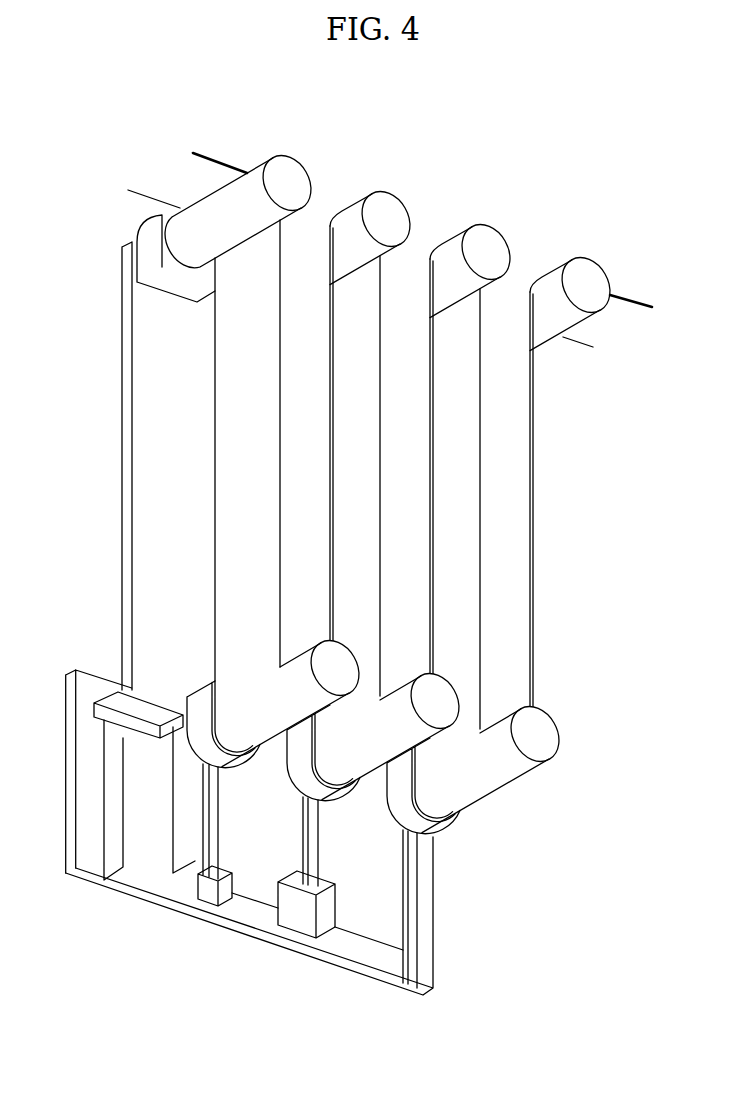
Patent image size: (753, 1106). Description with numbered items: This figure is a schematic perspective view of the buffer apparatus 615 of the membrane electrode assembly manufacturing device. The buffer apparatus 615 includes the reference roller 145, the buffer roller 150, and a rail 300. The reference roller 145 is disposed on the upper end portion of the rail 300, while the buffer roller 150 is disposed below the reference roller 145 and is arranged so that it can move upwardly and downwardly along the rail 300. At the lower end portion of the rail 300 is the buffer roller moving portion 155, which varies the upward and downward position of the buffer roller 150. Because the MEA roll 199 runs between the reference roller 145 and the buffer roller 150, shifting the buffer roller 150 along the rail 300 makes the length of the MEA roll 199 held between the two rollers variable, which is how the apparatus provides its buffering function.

The buffer apparatus 615 is at (418, 160).
The reference roller 145 is at (405, 208).
The buffer roller 150 is at (440, 708).
The MEA roll 199 is at (515, 468).
The rail 300 is at (160, 447).
The buffer roller moving portion 155 is at (143, 833).